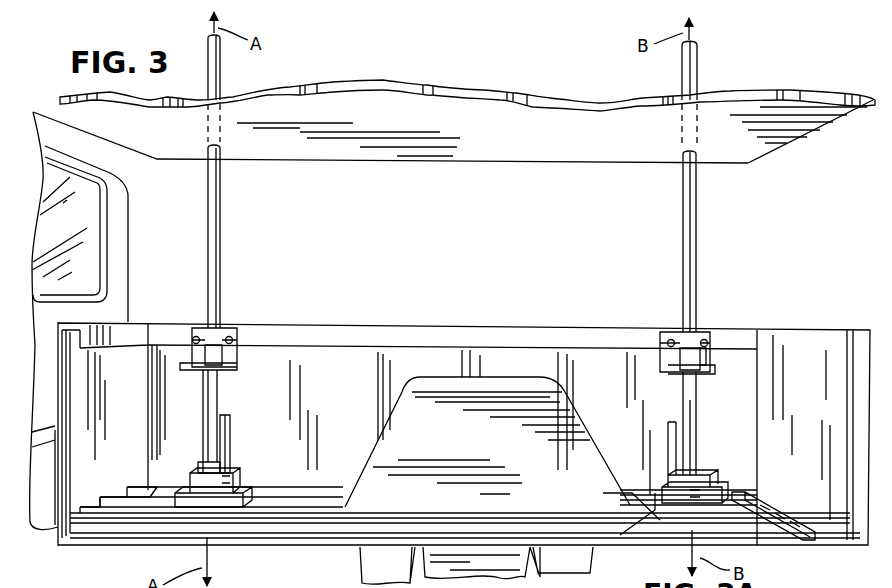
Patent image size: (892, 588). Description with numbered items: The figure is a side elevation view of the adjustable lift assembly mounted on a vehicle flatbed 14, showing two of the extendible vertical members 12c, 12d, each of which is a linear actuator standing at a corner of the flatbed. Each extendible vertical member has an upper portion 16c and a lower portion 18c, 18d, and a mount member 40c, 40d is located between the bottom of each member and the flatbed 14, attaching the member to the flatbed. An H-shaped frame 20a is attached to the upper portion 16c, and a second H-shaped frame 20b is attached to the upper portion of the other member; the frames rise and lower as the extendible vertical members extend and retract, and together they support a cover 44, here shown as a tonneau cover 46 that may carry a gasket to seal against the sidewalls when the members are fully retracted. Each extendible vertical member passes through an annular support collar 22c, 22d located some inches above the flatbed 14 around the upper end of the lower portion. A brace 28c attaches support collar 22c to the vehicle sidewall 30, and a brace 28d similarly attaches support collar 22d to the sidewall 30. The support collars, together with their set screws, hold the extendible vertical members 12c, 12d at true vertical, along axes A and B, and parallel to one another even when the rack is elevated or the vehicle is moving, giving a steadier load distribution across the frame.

The vehicle flatbed 14 is at (342, 527).
The vehicle sidewall 30 is at (350, 388).
The cover 44 is at (545, 86).
The tonneau cover 46 is at (562, 160).
The H-shaped frame 20a is at (198, 78).
The H-shaped frame 20b is at (708, 82).
The upper portion 16c is at (219, 262).
The extendible vertical member 12c is at (268, 300).
The extendible vertical member 12d is at (708, 308).
The support collar 22c is at (193, 370).
The support collar 22d is at (680, 356).
The brace 28c is at (235, 370).
The brace 28d is at (710, 372).
The mount member 40c is at (183, 505).
The mount member 40d is at (665, 503).
The lower portion 18c is at (248, 505).
The lower portion 18d is at (693, 413).